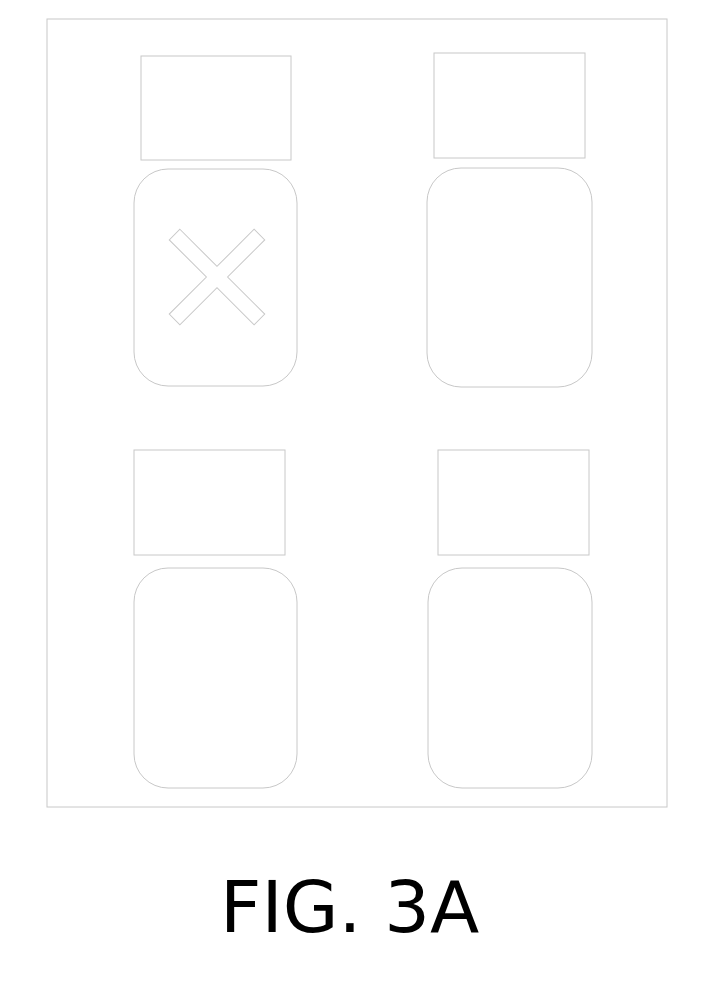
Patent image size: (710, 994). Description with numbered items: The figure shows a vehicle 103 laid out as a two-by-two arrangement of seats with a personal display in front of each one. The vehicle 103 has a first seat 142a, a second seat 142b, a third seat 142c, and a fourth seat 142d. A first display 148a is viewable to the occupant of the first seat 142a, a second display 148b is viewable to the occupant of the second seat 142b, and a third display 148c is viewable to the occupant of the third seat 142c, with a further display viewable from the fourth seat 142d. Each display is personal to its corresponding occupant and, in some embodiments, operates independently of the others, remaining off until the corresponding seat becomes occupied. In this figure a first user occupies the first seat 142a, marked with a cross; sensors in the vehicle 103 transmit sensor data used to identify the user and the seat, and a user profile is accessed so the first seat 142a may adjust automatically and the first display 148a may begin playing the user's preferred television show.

The vehicle 103 is at (165, 825).
The first display 148a is at (156, 149).
The second display 148b is at (445, 148).
The third display 148c is at (157, 528).
The first seat 142a is at (151, 267).
The second seat 142b is at (443, 266).
The third seat 142c is at (162, 664).
The fourth seat 142d is at (441, 675).